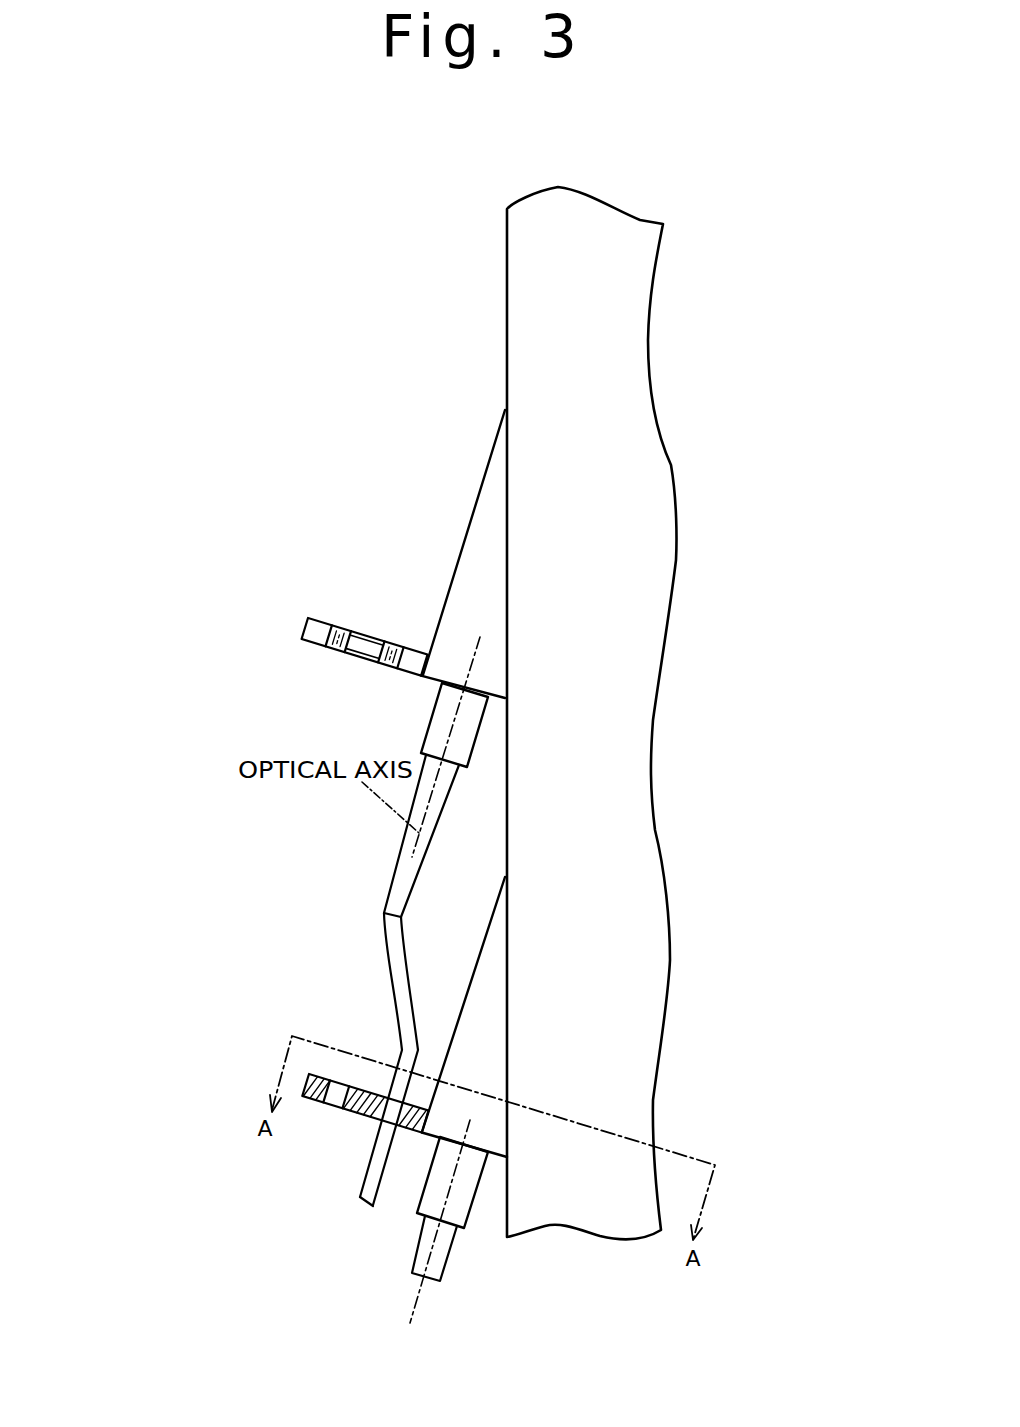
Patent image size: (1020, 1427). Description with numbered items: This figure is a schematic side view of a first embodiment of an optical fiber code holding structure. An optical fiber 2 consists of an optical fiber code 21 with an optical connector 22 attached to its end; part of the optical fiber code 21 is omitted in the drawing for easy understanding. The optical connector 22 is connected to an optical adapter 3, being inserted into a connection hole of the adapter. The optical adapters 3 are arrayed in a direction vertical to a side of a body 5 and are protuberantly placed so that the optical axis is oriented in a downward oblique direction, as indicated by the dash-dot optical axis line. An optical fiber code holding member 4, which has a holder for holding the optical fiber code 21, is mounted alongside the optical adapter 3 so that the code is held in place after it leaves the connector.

The optical fiber 2 is at (100, 693).
The optical fiber code 21 is at (385, 957).
The optical connector 22 is at (423, 728).
The optical adapter 3 is at (452, 582).
The optical fiber code holding member 4 is at (308, 623).
The body 5 is at (507, 808).